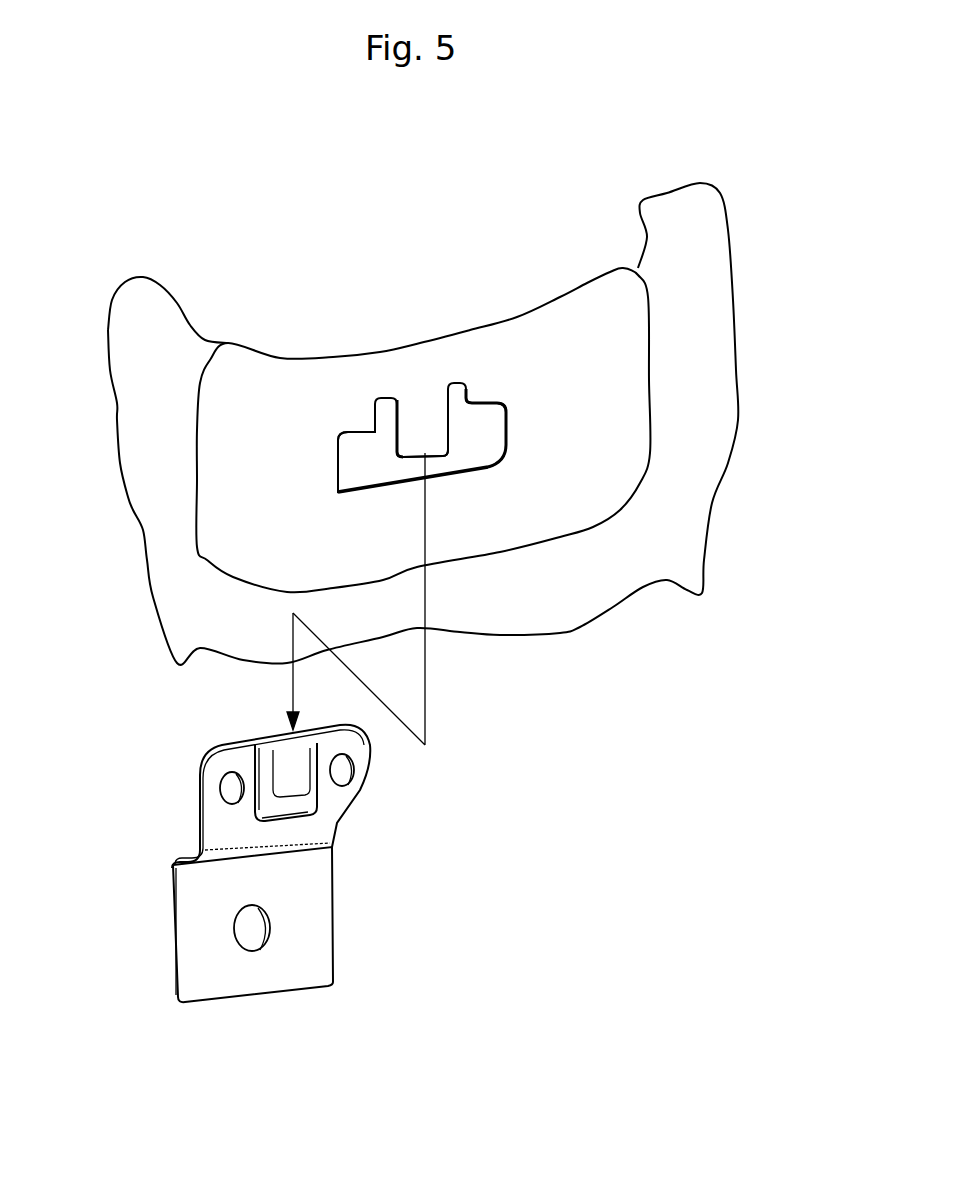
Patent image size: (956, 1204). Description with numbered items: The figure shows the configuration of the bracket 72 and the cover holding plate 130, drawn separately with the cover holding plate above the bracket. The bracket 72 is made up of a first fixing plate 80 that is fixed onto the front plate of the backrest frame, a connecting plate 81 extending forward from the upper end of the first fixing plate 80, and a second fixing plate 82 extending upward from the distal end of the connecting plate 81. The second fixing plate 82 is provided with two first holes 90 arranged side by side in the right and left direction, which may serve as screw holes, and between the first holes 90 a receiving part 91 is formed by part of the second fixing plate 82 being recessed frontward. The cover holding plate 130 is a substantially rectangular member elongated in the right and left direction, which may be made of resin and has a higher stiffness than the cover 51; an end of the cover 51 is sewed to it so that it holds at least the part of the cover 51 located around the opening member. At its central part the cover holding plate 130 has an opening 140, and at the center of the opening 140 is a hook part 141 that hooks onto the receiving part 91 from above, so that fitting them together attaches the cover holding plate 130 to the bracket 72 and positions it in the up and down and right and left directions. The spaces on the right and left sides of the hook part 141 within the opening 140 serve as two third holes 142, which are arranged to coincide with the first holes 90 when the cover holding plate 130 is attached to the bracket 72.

The cover 51 is at (712, 540).
The cover holding plate 130 is at (518, 316).
The opening 140 is at (509, 491).
The hook part 141 is at (397, 443).
The third holes 142 is at (360, 452).
The bracket 72 is at (289, 863).
The first fixing plate 80 is at (320, 927).
The connecting plate 81 is at (172, 863).
The second fixing plate 82 is at (290, 778).
The first holes 90 is at (235, 787).
The receiving part 91 is at (283, 740).